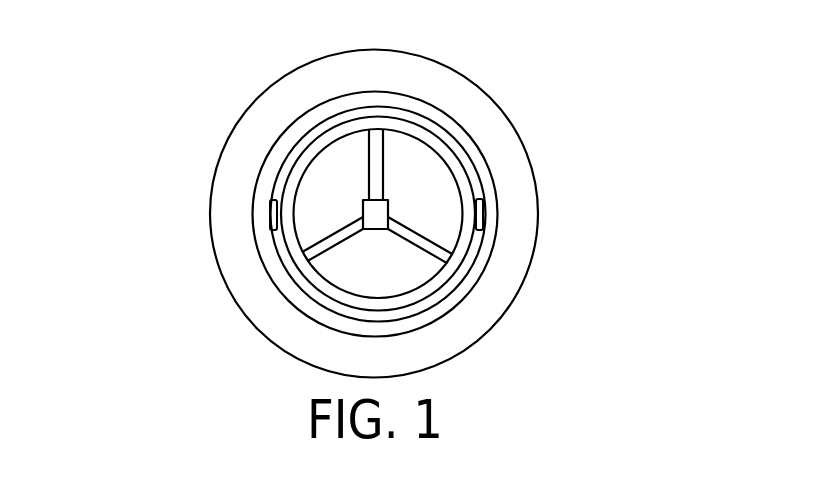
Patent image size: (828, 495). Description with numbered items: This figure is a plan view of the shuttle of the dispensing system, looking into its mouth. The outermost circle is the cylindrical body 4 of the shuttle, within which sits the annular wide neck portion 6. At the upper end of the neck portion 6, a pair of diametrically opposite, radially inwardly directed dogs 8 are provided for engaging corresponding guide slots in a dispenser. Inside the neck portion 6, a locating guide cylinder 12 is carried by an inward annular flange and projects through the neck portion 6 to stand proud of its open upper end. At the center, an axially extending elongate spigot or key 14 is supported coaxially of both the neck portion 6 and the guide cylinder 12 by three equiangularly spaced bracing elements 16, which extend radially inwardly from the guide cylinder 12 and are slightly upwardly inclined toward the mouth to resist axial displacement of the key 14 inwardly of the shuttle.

The cylindrical body 4 is at (538, 243).
The neck portion 6 is at (387, 93).
The dogs 8 is at (484, 210).
The locating guide cylinder 12 is at (337, 130).
The key 14 is at (372, 212).
The bracing elements 16 is at (381, 157).